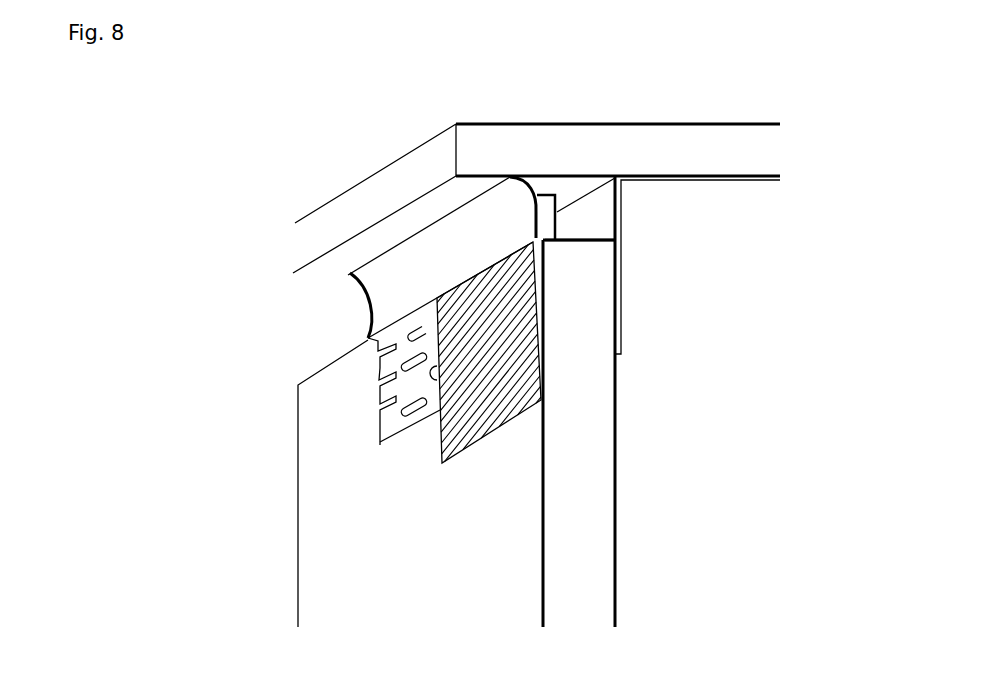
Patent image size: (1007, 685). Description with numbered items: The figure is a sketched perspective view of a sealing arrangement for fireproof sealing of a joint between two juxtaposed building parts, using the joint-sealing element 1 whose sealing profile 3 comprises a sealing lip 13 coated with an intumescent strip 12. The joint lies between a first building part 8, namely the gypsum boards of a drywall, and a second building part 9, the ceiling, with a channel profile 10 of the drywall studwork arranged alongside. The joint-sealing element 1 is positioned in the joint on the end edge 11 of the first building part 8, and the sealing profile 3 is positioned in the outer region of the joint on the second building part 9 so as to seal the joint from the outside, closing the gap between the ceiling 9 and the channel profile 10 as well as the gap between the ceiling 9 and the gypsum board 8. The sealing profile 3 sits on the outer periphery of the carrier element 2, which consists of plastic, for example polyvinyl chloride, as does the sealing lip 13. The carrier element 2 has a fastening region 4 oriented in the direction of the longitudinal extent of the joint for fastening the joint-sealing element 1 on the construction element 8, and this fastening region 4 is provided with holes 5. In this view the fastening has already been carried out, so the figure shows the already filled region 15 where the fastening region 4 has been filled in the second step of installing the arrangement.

The joint-sealing element 1 is at (331, 321).
The carrier element 2 is at (397, 348).
The sealing profile 3 is at (540, 197).
The fastening region 4 is at (393, 420).
The holes 5 is at (405, 368).
The first building part 8 is at (583, 498).
The second building part 9 is at (617, 147).
The channel profile 10 is at (617, 310).
The end edge 11 is at (557, 238).
The intumescent strip 12 is at (549, 213).
The sealing lip 13 is at (527, 175).
The filled region 15 is at (443, 457).